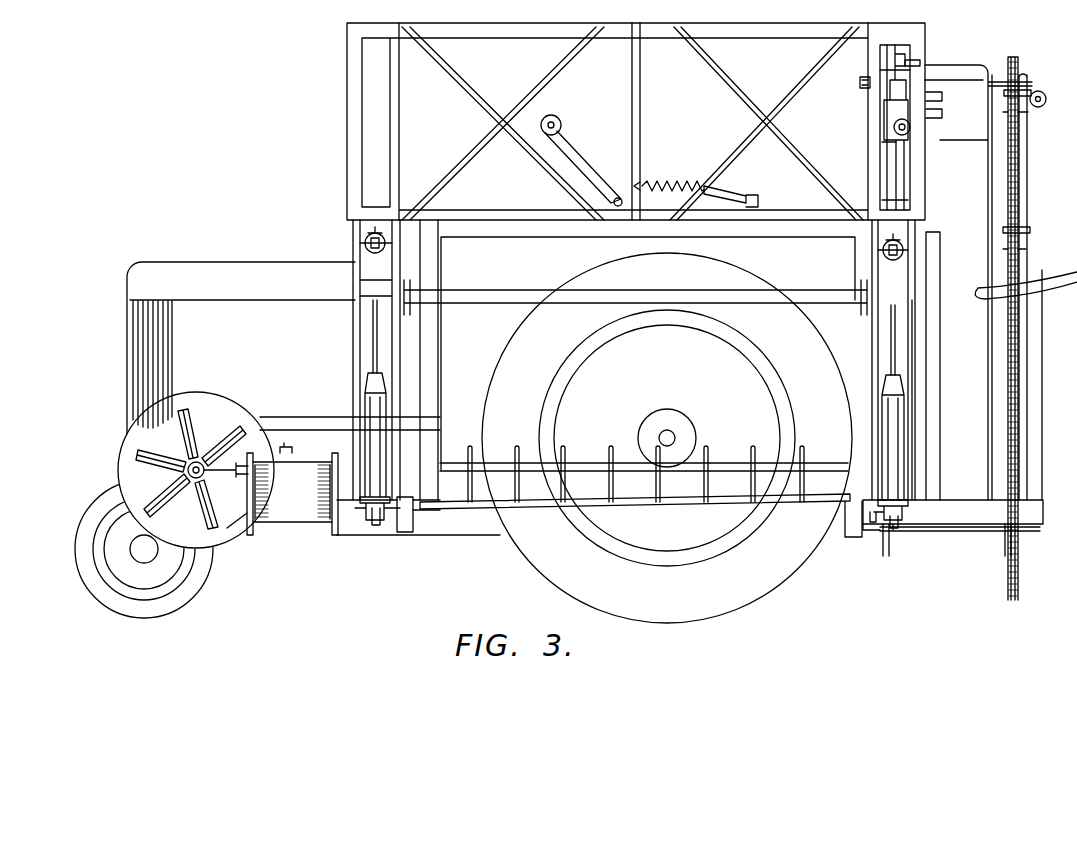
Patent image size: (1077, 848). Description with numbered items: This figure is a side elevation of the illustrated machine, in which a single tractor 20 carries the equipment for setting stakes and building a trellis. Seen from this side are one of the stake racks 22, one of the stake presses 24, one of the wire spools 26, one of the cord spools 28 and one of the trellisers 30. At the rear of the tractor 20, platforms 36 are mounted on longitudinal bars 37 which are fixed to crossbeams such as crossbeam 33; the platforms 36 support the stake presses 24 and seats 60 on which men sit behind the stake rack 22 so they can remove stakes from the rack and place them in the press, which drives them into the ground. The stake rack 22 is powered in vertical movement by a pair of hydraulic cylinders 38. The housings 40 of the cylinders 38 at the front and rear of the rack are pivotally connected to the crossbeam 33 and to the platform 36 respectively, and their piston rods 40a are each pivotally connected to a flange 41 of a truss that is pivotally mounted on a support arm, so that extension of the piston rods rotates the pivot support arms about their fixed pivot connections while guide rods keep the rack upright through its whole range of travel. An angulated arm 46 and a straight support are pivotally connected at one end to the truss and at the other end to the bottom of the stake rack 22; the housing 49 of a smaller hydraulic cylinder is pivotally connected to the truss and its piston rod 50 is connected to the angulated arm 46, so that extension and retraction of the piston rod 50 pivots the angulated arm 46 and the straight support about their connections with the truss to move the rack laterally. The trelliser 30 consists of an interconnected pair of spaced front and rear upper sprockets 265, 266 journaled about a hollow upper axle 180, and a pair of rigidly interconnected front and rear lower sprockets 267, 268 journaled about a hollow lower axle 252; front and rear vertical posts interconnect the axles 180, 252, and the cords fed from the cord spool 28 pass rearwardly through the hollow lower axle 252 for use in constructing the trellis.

The tractor 20 is at (262, 353).
The stake rack 22 is at (325, 123).
The stake press 24 is at (879, 150).
The wire spool 26 is at (102, 470).
The cord spool 28 is at (290, 545).
The trelliser 30 is at (1039, 184).
The crossbeam 33 is at (400, 533).
The platform 36 is at (966, 514).
The longitudinal bar 37 is at (473, 528).
The hydraulic cylinder 38 is at (342, 402).
The housing 40 is at (372, 436).
The piston rod 40a is at (372, 352).
The flange 41 is at (366, 279).
The angulated arm 46 is at (408, 248).
The housing 49 is at (364, 246).
The piston rod 50 is at (375, 232).
The seat 60 is at (1050, 290).
The hollow upper axle 180 is at (997, 80).
The hollow lower axle 252 is at (946, 528).
The front upper sprocket 265 is at (904, 72).
The rear upper sprocket 266 is at (1013, 66).
The front lower sprocket 267 is at (892, 548).
The rear lower sprocket 268 is at (1010, 548).